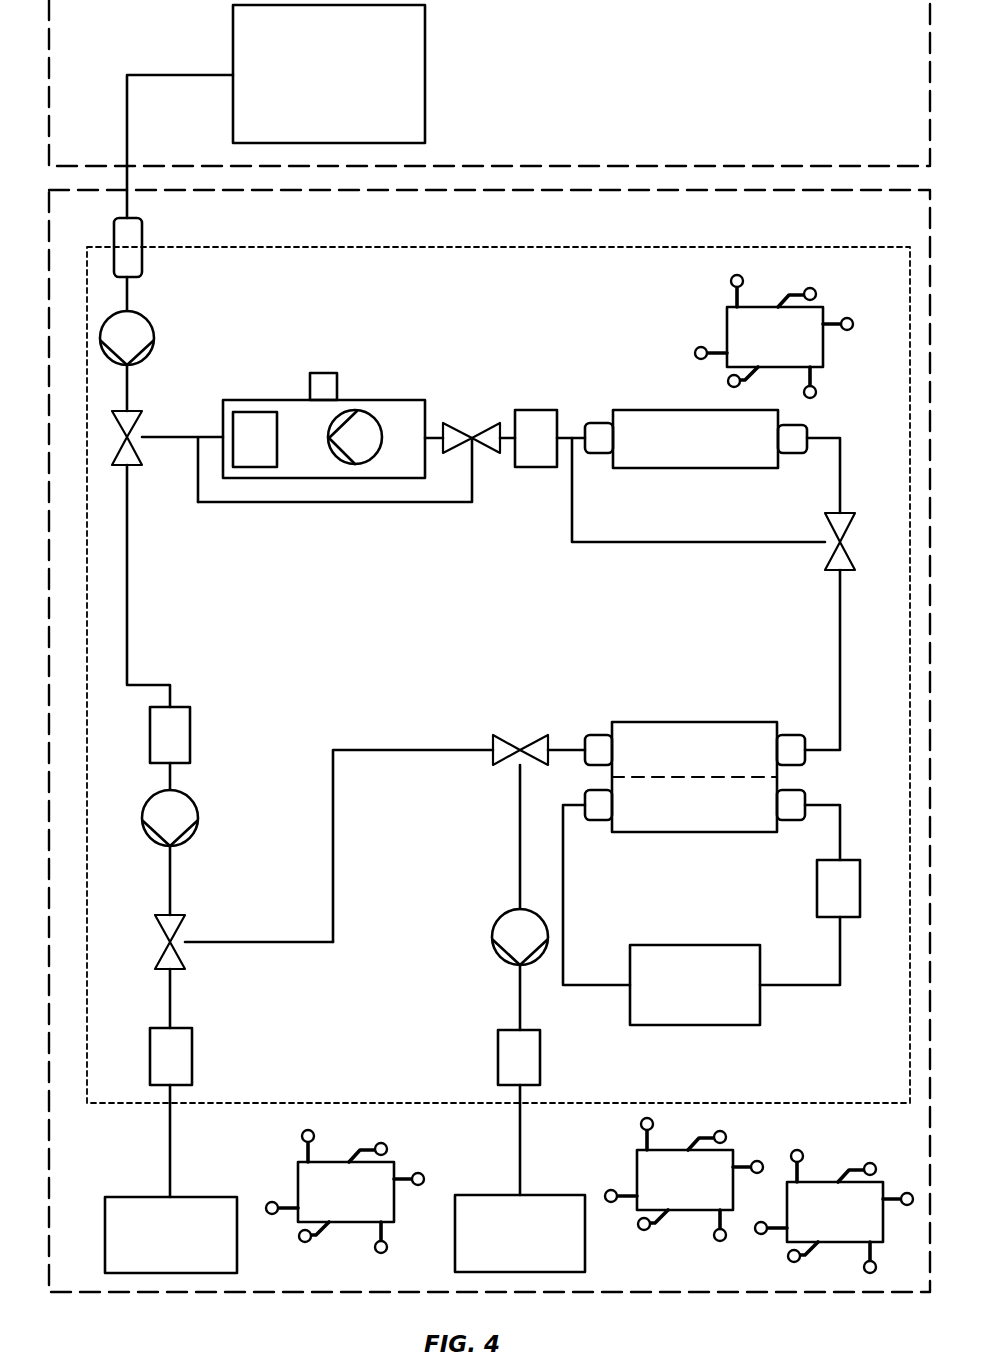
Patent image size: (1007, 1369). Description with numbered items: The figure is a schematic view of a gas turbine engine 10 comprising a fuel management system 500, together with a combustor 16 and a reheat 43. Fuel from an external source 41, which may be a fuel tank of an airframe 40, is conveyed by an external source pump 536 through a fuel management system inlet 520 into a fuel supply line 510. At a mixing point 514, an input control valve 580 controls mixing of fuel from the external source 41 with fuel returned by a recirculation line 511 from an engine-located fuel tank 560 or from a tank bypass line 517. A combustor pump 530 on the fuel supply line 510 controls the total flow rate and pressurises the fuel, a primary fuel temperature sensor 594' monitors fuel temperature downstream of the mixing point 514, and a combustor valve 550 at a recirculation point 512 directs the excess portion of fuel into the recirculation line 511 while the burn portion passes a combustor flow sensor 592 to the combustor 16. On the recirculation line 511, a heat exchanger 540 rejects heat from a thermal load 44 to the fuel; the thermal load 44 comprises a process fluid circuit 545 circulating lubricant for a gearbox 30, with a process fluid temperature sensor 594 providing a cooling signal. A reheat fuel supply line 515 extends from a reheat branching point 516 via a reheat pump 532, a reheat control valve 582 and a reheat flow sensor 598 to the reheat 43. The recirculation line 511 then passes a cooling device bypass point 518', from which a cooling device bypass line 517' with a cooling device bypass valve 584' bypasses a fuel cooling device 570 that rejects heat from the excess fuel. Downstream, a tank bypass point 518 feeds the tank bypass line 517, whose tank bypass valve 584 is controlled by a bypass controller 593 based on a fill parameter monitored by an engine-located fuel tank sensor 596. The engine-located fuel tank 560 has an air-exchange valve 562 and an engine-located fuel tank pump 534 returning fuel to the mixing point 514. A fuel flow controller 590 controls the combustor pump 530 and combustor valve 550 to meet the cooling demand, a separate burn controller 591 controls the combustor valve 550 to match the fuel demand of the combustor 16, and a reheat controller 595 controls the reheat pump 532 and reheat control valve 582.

The airframe 40 is at (60, 26).
The external source 41 is at (425, 73).
The gas turbine engine 10 is at (875, 232).
The fuel management system 500 is at (866, 280).
The fuel management system inlet 520 is at (142, 240).
The external source pump 536 is at (138, 330).
The mixing point 514 is at (141, 432).
The fuel supply line 510 is at (150, 684).
The input control valve 580 is at (188, 468).
The tank bypass line 517 is at (335, 523).
The engine-located fuel tank 560 is at (265, 400).
The engine-located fuel tank sensor 596 is at (248, 458).
The air-exchange valve 562 is at (328, 388).
The engine-located fuel tank pump 534 is at (358, 445).
The tank bypass point 518 is at (474, 399).
The tank bypass valve 584 is at (499, 525).
The cooling device bypass line 517' is at (698, 527).
The fuel cooling device 570 is at (678, 412).
The cooling device bypass valve 584' is at (789, 490).
The cooling device bypass point 518' is at (862, 562).
The recirculation line 511 is at (840, 608).
The heat exchanger 540 is at (658, 798).
The reheat branching point 516 is at (517, 740).
The reheat control valve 582 is at (548, 745).
The reheat fuel supply line 515 is at (518, 800).
The reheat pump 532 is at (498, 921).
The reheat flow sensor 598 is at (508, 1028).
The reheat 43 is at (490, 1194).
The primary fuel temperature sensor 594' is at (259, 702).
The combustor pump 530 is at (193, 802).
The recirculation point 512 is at (187, 936).
The combustor valve 550 is at (175, 965).
The combustor flow sensor 592 is at (172, 1058).
The combustor 16 is at (133, 1197).
The thermal load 44 is at (806, 1016).
The process fluid temperature sensor 594 is at (745, 877).
The process fluid circuit 545 is at (840, 943).
The gearbox 30 is at (740, 1026).
The bypass controller 593 is at (757, 330).
The reheat controller 595 is at (298, 1183).
The fuel flow controller 590 is at (637, 1175).
The burn controller 591 is at (788, 1238).